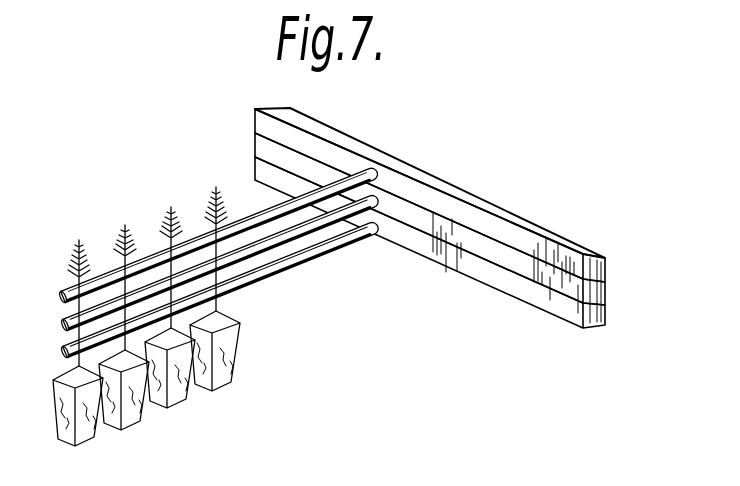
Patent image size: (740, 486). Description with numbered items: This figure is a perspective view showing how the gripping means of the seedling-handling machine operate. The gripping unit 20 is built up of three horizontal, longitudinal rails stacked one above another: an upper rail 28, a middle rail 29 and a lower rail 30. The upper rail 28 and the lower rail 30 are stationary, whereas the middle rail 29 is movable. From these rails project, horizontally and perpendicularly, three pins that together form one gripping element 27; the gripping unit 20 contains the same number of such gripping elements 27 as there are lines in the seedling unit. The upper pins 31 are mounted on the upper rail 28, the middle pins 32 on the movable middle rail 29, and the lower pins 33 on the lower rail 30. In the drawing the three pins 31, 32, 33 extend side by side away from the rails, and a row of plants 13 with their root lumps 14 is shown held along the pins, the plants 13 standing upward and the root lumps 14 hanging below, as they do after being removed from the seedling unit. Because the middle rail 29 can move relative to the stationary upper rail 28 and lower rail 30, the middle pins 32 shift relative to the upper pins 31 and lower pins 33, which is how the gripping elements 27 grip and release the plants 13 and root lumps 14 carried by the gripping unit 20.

The plants 13 is at (214, 189).
The root lumps 14 is at (131, 419).
The gripping unit 20 is at (460, 217).
The gripping element 27 is at (227, 254).
The upper rail 28 is at (583, 251).
The middle rail 29 is at (596, 295).
The lower rail 30 is at (590, 328).
The upper pins 31 is at (253, 214).
The middle pins 32 is at (252, 256).
The lower pins 33 is at (340, 247).